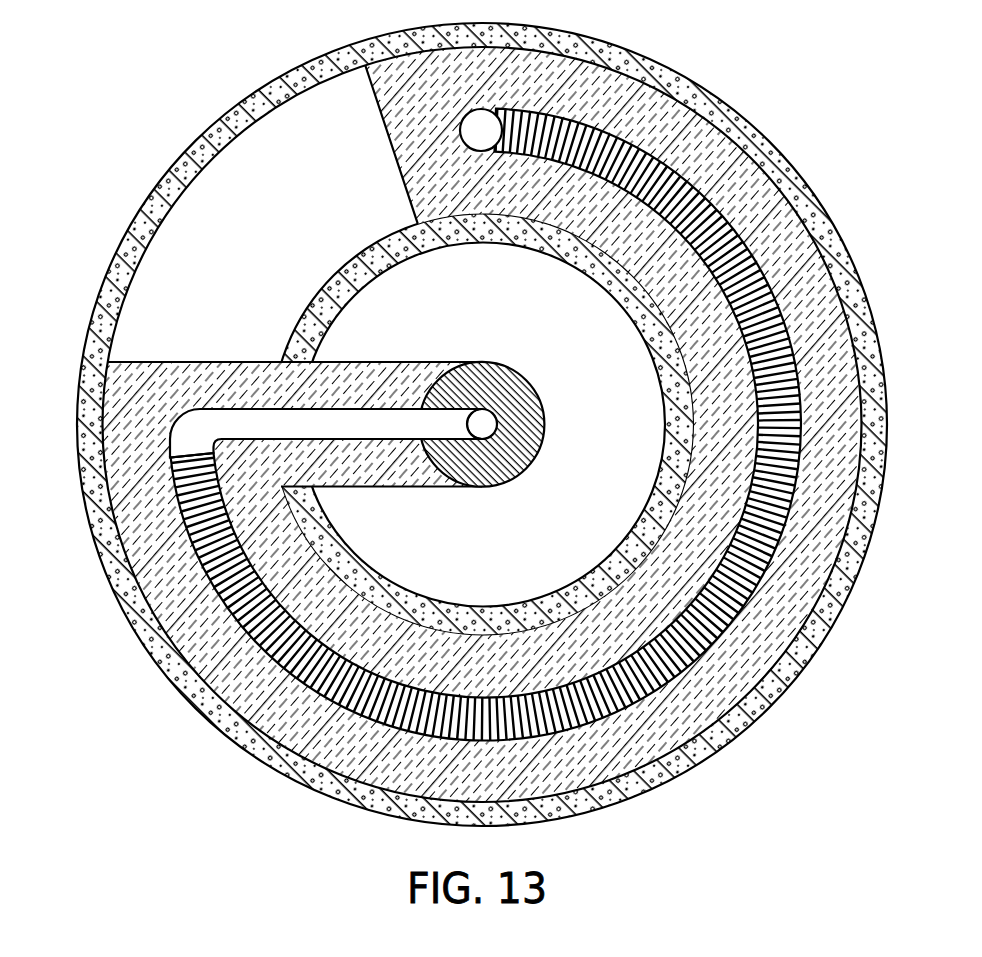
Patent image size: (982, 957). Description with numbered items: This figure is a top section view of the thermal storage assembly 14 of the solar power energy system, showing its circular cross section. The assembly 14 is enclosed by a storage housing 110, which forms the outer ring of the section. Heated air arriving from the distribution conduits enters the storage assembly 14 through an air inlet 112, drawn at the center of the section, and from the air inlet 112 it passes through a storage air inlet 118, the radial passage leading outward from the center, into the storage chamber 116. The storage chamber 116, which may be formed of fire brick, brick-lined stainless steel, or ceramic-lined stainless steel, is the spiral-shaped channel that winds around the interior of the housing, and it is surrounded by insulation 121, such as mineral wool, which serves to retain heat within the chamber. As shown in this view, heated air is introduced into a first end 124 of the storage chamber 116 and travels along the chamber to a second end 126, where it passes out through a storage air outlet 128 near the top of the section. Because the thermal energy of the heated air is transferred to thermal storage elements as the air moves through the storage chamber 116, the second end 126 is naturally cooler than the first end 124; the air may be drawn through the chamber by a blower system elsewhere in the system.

The thermal storage assembly 14 is at (467, 419).
The storage housing 110 is at (281, 82).
The air inlet 112 is at (492, 423).
The storage chamber 116 is at (186, 624).
The storage air inlet 118 is at (271, 433).
The insulation 121 is at (824, 299).
The first end 124 is at (160, 478).
The second end 126 is at (578, 112).
The storage air outlet 128 is at (464, 129).